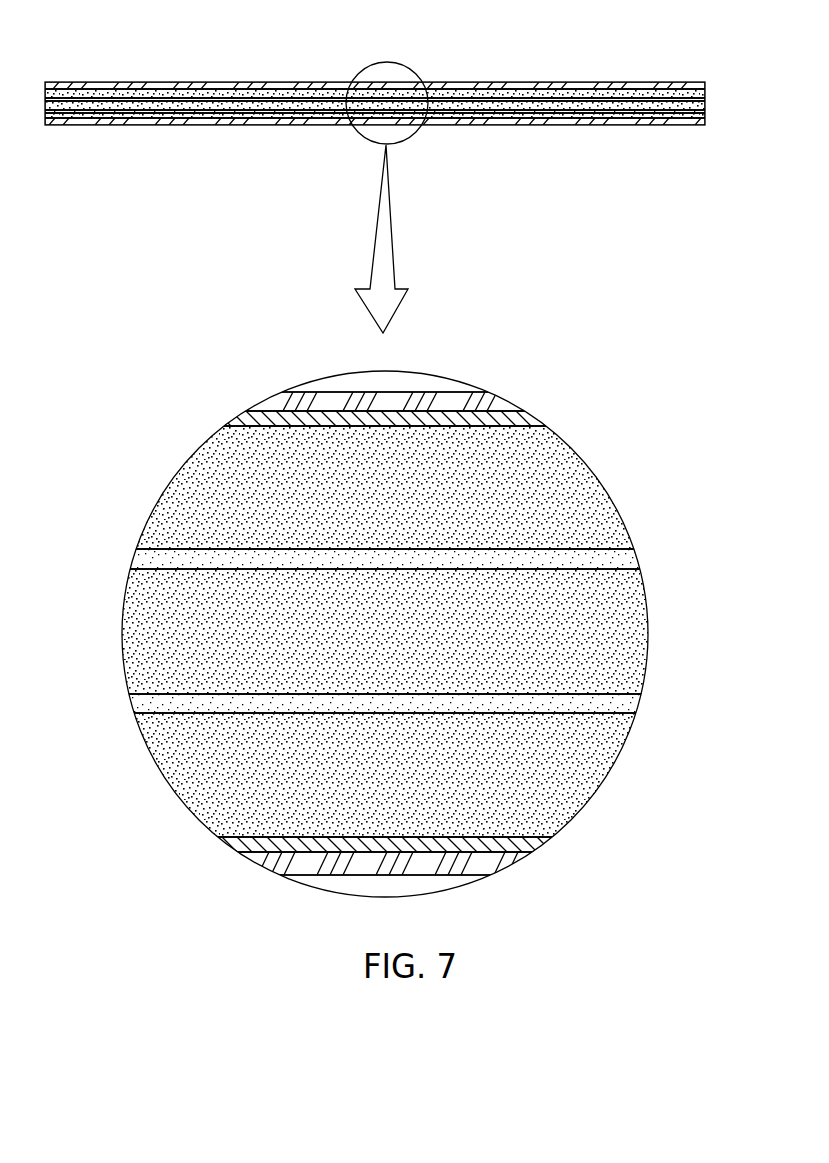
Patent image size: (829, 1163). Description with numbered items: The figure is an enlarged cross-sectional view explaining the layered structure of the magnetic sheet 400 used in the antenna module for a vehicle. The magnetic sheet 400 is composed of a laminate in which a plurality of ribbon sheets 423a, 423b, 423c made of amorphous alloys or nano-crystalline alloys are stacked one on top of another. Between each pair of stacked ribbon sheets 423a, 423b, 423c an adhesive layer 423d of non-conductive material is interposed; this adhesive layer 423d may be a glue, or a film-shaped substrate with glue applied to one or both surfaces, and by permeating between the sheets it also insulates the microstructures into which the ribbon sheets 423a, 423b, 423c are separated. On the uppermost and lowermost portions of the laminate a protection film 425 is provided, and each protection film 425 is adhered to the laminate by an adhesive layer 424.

The magnetic sheet 400 is at (461, 82).
The ribbon sheet 423a is at (585, 483).
The ribbon sheet 423b is at (622, 611).
The ribbon sheet 423c is at (595, 774).
The adhesive layer 423d is at (620, 557).
The adhesive layer 424 is at (520, 421).
The protection film 425 is at (478, 405).